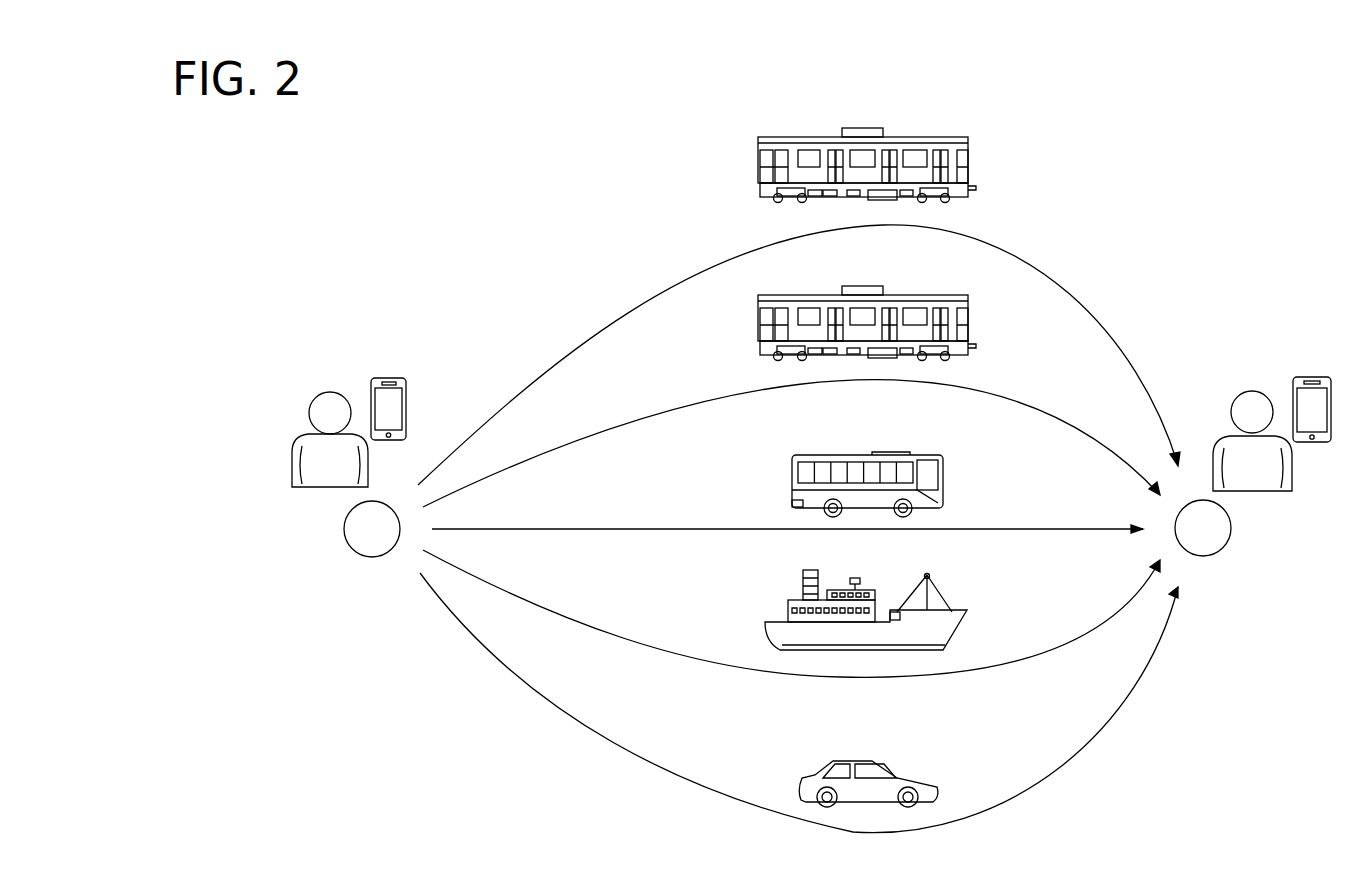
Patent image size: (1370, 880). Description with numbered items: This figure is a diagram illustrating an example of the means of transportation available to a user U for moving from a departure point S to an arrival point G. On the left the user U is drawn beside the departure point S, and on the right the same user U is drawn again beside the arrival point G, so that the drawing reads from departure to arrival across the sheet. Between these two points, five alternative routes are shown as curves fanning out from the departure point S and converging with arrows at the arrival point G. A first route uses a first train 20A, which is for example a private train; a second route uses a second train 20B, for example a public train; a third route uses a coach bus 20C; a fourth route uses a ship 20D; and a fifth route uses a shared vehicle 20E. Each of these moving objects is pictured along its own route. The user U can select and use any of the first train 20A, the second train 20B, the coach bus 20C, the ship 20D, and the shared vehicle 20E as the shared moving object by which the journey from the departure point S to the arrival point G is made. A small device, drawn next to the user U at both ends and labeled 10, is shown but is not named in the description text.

The mobile terminal 10 is at (387, 376).
The first train 20A is at (970, 159).
The second train 20B is at (970, 317).
The coach bus 20C is at (943, 479).
The ship 20D is at (945, 593).
The shared vehicle 20E is at (918, 781).
The user U is at (330, 390).
The departure point S is at (372, 557).
The arrival point G is at (1203, 556).